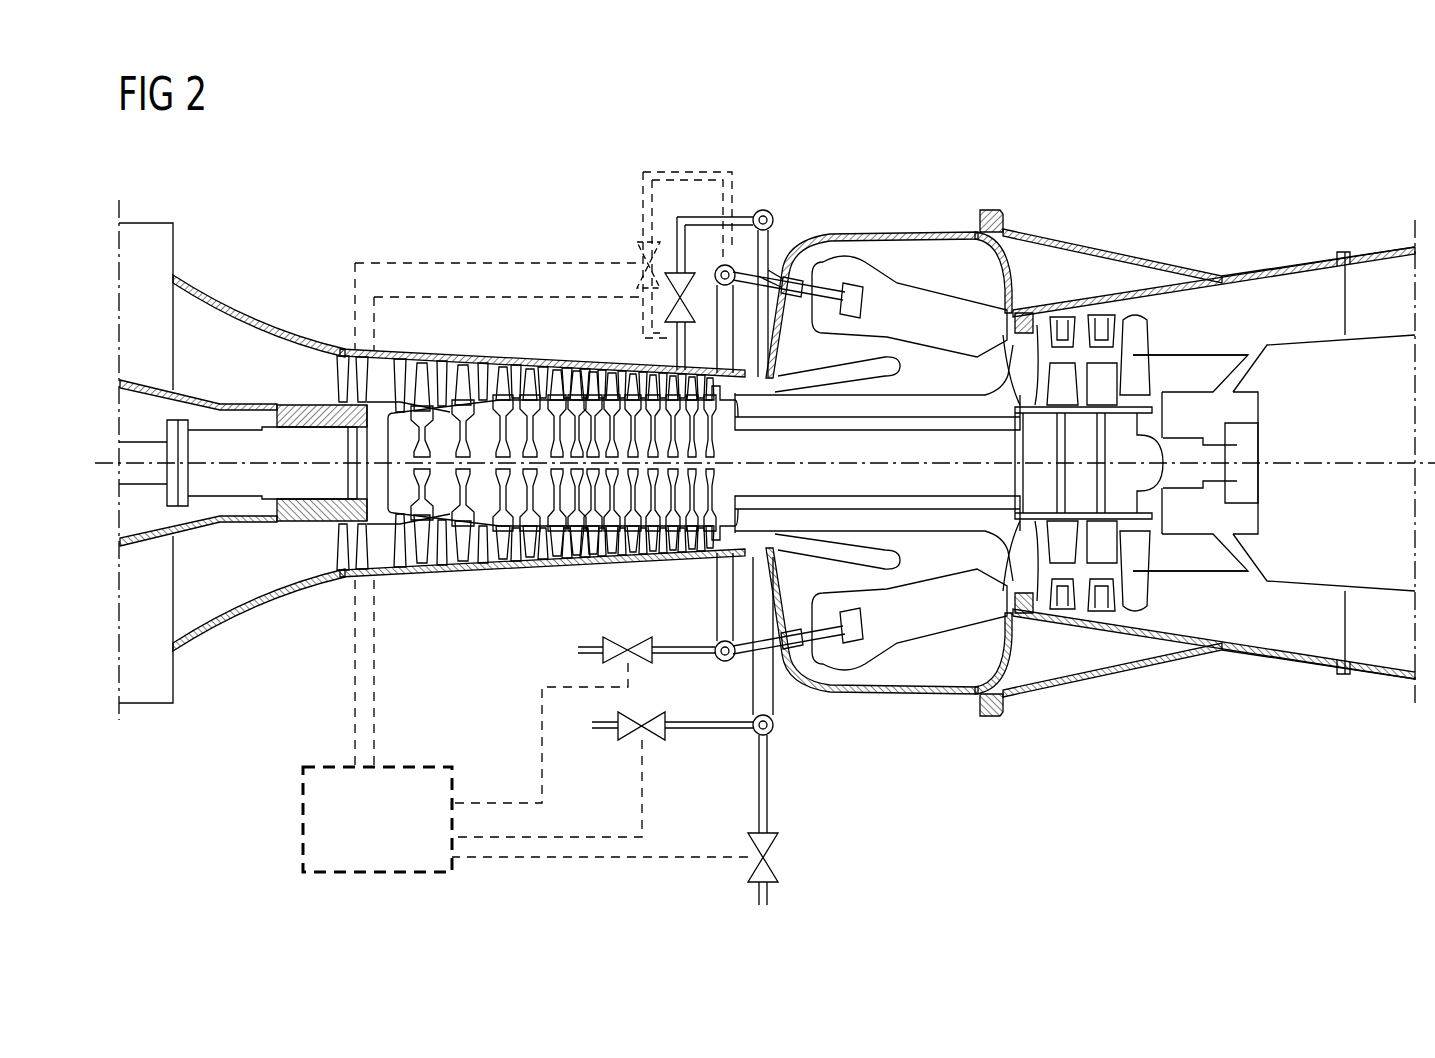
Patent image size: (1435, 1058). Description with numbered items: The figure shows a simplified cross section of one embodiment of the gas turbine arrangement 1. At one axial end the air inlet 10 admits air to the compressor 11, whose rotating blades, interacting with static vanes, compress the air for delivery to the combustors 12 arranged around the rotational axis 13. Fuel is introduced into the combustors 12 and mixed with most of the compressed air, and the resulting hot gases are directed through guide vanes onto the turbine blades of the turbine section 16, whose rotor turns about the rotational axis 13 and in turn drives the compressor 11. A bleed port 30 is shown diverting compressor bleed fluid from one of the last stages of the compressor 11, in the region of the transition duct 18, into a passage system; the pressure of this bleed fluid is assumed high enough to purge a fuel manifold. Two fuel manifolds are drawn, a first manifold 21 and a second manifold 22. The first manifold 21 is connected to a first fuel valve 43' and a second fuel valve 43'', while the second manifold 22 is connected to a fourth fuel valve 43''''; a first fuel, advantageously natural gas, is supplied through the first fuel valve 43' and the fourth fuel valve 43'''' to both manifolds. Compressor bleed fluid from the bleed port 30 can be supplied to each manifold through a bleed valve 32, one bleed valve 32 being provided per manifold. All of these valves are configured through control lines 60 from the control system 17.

The gas turbine arrangement 1 is at (448, 173).
The air inlet 10 is at (163, 258).
The compressor 11 is at (540, 342).
The combustor 12 is at (922, 306).
The rotational axis 13 is at (1310, 462).
The turbine section 16 is at (1060, 320).
The control system 17 is at (303, 826).
The transition duct 18 is at (768, 390).
The first manifold 21 is at (763, 210).
The second manifold 22 is at (718, 643).
The bleed port 30 is at (672, 355).
The bleed valve 32 is at (641, 252).
The first fuel valve 43' is at (794, 731).
The second fuel valve 43'' is at (672, 757).
The fourth fuel valve 43'''' is at (646, 620).
The control lines 60 is at (355, 692).